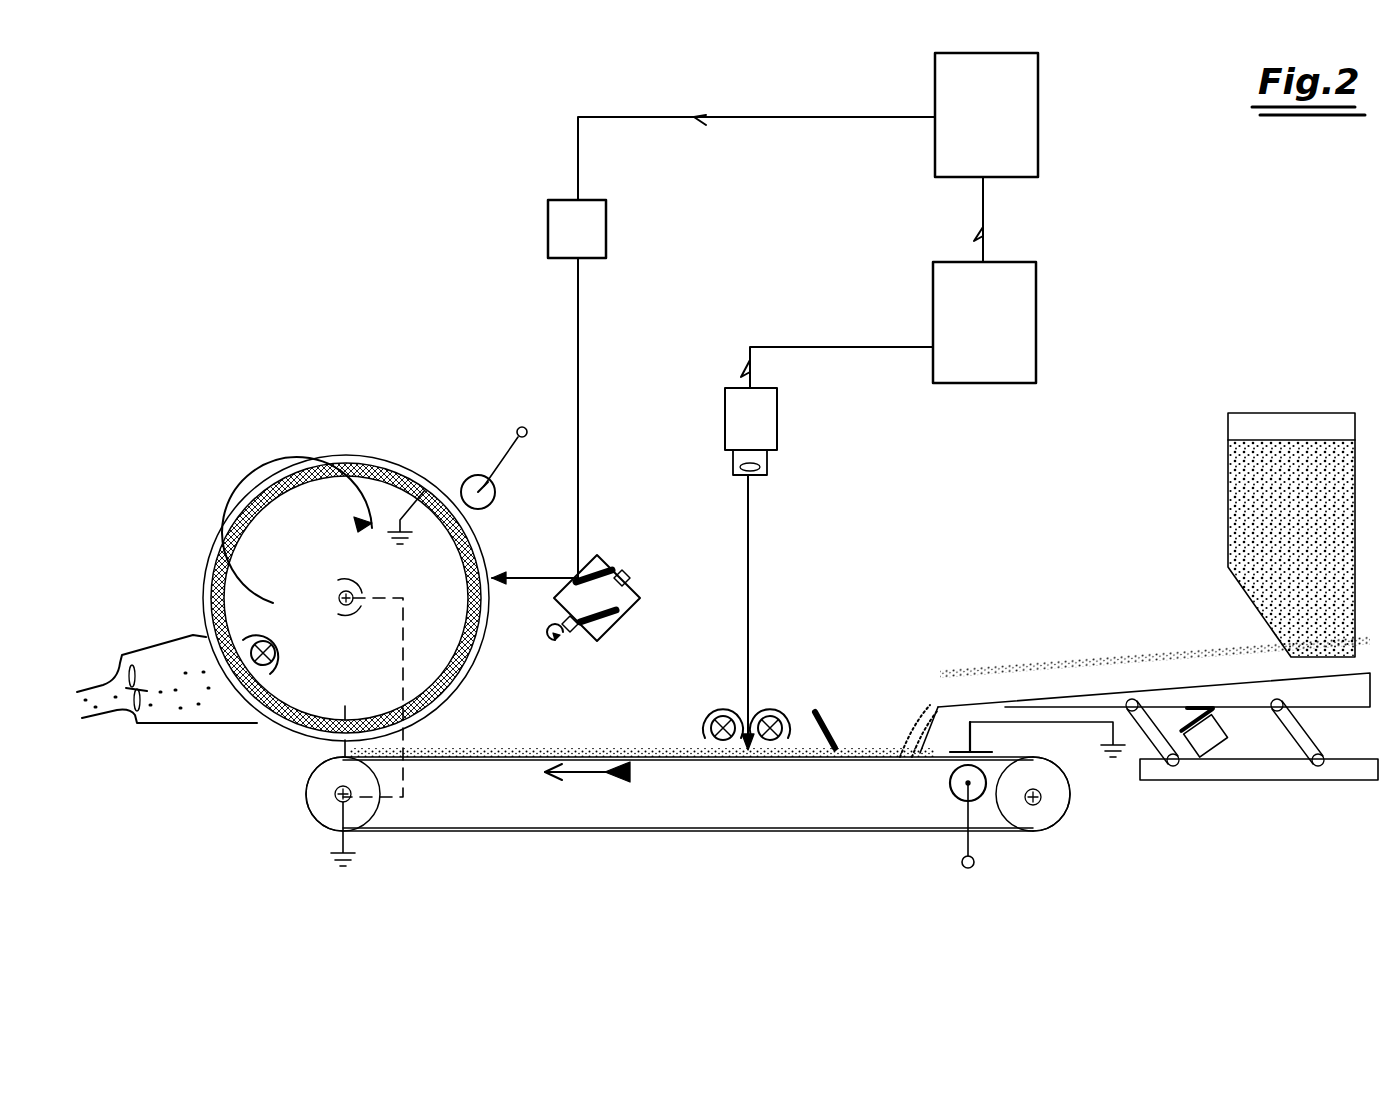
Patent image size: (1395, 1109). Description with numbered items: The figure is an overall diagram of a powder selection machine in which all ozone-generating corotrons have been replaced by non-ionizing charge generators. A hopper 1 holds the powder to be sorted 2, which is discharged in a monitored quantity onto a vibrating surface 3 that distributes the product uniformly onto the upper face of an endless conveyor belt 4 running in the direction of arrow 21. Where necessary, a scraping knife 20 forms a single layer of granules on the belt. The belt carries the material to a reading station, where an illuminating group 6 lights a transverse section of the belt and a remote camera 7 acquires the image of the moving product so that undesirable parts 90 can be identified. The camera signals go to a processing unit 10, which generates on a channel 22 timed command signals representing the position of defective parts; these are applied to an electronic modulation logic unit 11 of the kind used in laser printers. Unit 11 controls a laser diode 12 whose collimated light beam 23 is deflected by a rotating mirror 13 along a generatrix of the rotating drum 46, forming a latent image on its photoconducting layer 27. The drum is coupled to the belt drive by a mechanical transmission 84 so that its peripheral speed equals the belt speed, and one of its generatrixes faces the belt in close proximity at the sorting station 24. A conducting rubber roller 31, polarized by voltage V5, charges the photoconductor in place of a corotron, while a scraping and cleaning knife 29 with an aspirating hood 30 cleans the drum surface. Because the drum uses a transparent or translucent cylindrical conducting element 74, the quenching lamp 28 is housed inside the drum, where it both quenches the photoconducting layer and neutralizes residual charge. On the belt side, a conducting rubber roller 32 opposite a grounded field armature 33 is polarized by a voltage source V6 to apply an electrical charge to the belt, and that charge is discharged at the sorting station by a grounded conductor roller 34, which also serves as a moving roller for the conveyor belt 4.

The hopper 1 is at (1322, 412).
The powder to be sorted 2 is at (1347, 497).
The vibrating surface 3 is at (1360, 683).
The endless conveyor belt 4 is at (720, 845).
The illuminating group 6 is at (722, 707).
The remote camera 7 is at (778, 420).
The processing unit 10 is at (1037, 343).
The electronic modulation logic unit 11 is at (1038, 138).
The laser diode 12 is at (606, 222).
The rotating mirror 13 is at (632, 612).
The scraping knife 20 is at (822, 710).
The arrow 21 is at (597, 787).
The channel 22 is at (990, 222).
The light beam 23 is at (580, 362).
The sorting station 24 is at (343, 750).
The photoconducting layer 27 is at (472, 665).
The normalizing quenching lamp 28 is at (280, 665).
The scraping and cleaning knife 29 is at (205, 632).
The aspirating hood 30 is at (128, 658).
The conducting rubber roller 31 is at (478, 475).
The conducting rubber roller 32 is at (950, 785).
The grounded field armature 33 is at (985, 748).
The conductor roller 34 is at (358, 808).
The drum 46 is at (252, 555).
The cylindrical conducting element 74 is at (288, 478).
The mechanical transmission 84 is at (405, 752).
The undesirable parts 90 is at (543, 748).
The voltage V5 is at (512, 444).
The voltage source V6 is at (985, 830).